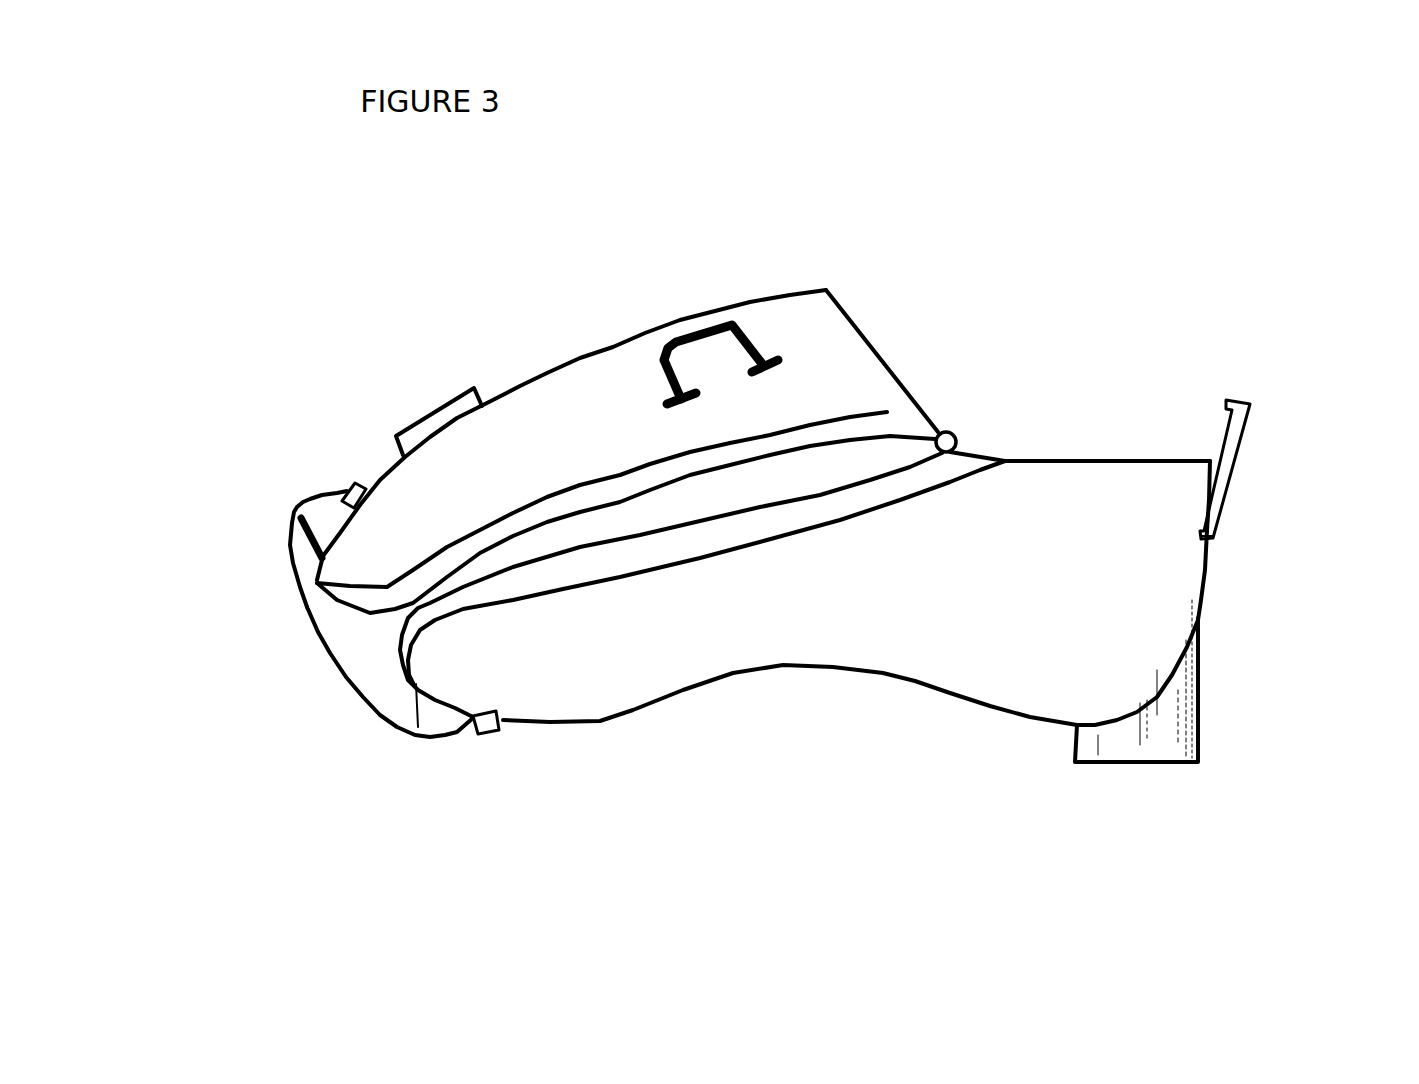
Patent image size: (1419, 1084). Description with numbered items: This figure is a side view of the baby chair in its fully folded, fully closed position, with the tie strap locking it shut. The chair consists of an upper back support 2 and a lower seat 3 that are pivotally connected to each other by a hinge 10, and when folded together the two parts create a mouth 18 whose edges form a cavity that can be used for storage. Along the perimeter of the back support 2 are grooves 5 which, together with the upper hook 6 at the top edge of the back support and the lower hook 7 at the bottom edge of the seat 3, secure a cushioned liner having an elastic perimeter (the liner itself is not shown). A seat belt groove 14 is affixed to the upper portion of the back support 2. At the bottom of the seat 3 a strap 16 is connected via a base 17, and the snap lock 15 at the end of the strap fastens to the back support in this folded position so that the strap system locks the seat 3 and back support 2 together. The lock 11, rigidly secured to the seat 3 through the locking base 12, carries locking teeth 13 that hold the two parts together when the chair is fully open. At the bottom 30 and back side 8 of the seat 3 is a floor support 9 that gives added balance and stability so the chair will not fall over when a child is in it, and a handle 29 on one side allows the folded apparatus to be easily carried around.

The upper back support 2 is at (627, 342).
The lower seat 3 is at (702, 703).
The grooves 5 is at (439, 332).
The upper hook 6 is at (236, 485).
The lower hook 7 is at (265, 554).
The back side 8 is at (1229, 661).
The floor support 9 is at (1220, 681).
The hinge 10 is at (969, 348).
The lock 11 is at (1302, 515).
The locking base 12 is at (1272, 540).
The locking teeth 13 is at (1234, 413).
The seat belt groove 14 is at (317, 388).
The snap lock 15 is at (265, 374).
The strap 16 is at (320, 672).
The base 17 is at (775, 780).
The mouth 18 is at (1090, 304).
The handle 29 is at (726, 277).
The bottom 30 is at (1108, 817).